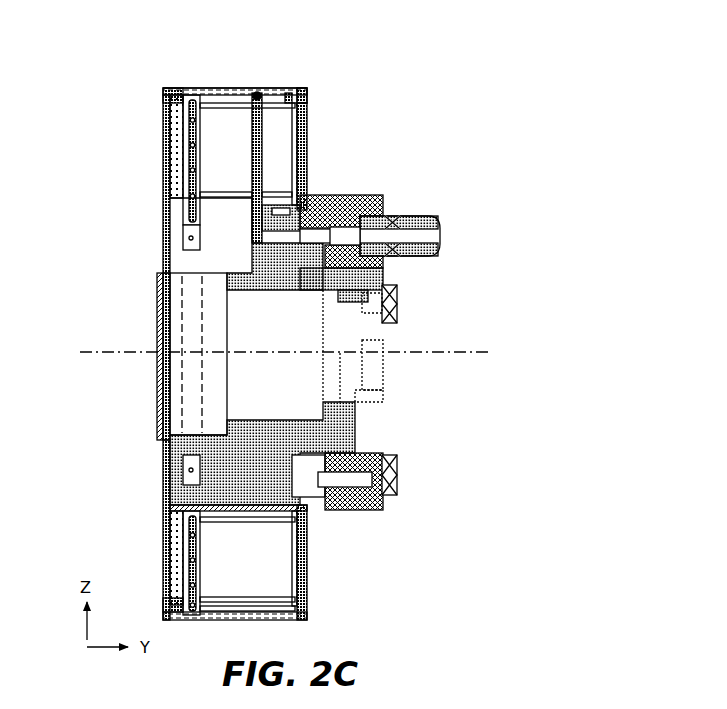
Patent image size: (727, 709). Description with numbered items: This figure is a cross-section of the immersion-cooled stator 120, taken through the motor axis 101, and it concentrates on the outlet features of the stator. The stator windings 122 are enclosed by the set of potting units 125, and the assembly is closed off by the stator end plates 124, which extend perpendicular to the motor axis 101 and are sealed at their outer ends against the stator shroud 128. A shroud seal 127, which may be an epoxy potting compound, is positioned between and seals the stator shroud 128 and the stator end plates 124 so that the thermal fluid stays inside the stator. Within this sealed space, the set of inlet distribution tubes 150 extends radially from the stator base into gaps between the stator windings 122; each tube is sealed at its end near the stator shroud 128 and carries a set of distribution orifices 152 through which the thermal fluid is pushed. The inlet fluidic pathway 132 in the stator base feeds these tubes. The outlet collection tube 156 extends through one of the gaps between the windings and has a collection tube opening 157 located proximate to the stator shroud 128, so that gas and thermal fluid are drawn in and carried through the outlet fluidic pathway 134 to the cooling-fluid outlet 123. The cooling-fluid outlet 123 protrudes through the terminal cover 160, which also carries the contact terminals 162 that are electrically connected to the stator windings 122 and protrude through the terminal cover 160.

The motor axis 101 is at (483, 353).
The immersion-cooled stator 120 is at (115, 70).
The stator windings 122 is at (220, 126).
The cooling-fluid outlet 123 is at (438, 250).
The stator end plates 124 is at (163, 246).
The set of potting units 125 is at (176, 187).
The shroud seal 127 is at (163, 100).
The stator shroud 128 is at (288, 90).
The inlet fluidic pathway 132 is at (186, 318).
The outlet fluidic pathway 134 is at (250, 193).
The set of inlet distribution tubes 150 is at (190, 128).
The set of distribution orifices 152 is at (188, 165).
The outlet collection tube 156 is at (290, 95).
The collection tube opening 157 is at (258, 97).
The terminal cover 160 is at (338, 200).
The contact terminals 162 is at (398, 298).